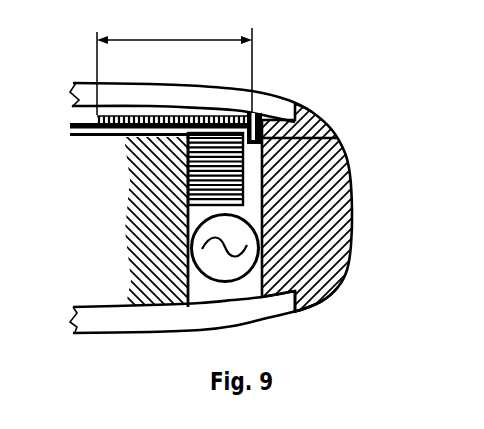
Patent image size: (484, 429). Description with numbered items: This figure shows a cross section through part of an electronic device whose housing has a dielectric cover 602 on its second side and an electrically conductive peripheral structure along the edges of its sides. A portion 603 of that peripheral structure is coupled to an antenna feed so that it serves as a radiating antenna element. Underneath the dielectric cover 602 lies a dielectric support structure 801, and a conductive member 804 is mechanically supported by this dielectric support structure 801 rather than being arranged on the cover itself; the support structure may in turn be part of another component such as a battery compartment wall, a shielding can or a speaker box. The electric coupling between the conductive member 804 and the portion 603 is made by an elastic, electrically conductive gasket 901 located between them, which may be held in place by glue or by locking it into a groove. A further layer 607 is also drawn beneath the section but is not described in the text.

The dielectric cover 602 is at (76, 83).
The second housing shell 607 is at (75, 332).
The dielectric support structure 801 is at (68, 136).
The conductive member 804 is at (172, 117).
The electrically conductive gasket 901 is at (338, 138).
The portion of the peripheral structure 603 is at (330, 285).